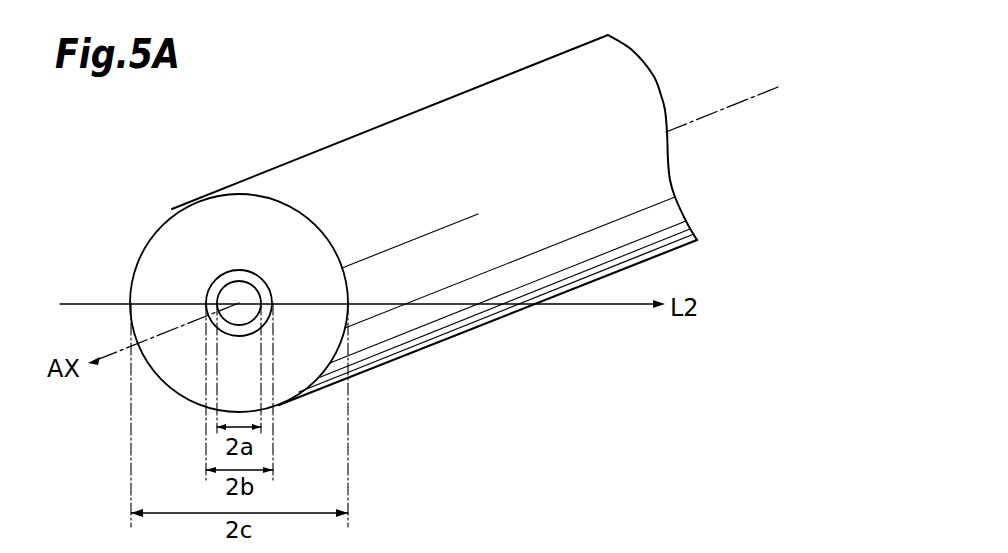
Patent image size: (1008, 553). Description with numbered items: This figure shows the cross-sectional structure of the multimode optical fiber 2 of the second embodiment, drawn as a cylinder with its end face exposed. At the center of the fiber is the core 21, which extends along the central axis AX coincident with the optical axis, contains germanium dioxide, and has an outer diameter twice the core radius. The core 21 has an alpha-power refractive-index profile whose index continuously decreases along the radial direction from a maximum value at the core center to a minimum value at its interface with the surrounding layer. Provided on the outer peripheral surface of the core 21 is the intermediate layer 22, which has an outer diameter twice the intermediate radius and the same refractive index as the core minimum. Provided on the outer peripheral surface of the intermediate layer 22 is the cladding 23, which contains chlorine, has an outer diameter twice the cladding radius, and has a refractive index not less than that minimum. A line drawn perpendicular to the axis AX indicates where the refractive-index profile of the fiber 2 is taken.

The multimode optical fiber 2 is at (482, 66).
The core 21 is at (241, 290).
The intermediate layer 22 is at (215, 288).
The cladding 23 is at (207, 215).